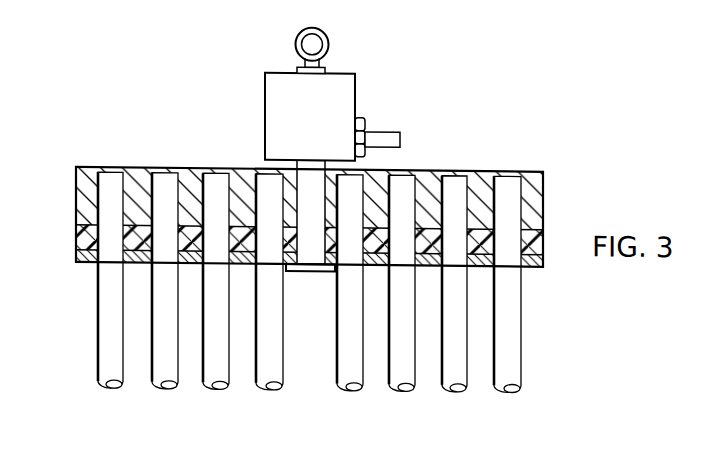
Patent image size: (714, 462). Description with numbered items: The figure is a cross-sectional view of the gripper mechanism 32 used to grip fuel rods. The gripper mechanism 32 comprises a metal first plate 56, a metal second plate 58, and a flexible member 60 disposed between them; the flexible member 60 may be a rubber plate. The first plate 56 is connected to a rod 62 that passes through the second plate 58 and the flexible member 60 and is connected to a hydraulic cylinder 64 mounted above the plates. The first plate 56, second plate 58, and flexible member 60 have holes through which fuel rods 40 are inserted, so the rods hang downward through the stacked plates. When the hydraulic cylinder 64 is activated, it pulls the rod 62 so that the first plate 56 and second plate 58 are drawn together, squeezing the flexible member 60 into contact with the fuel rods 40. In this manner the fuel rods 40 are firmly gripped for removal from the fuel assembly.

The gripper mechanism 32 is at (466, 145).
The fuel rods 40 is at (506, 343).
The first plate 56 is at (532, 257).
The second plate 58 is at (537, 184).
The flexible member 60 is at (533, 232).
The rod 62 is at (313, 250).
The hydraulic cylinder 64 is at (342, 88).